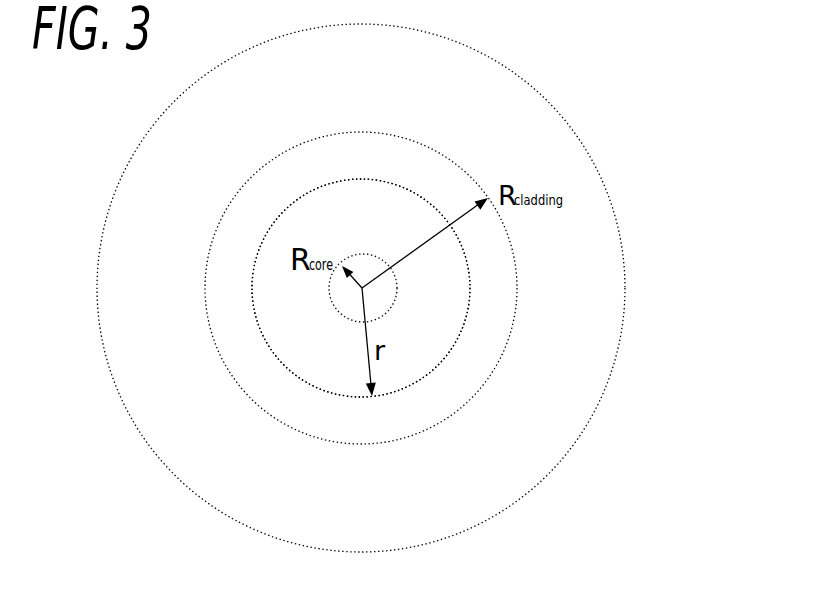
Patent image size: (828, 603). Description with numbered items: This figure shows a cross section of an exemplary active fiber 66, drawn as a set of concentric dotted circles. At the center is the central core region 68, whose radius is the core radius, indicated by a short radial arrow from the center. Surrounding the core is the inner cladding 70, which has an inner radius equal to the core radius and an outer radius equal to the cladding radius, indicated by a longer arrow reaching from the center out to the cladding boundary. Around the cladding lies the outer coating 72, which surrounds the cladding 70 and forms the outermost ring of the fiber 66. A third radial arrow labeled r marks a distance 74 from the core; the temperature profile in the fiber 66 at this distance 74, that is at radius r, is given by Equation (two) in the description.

The active fiber 66 is at (583, 111).
The central core region 68 is at (387, 291).
The inner cladding 70 is at (490, 310).
The outer coating 72 is at (538, 383).
The distance from the core 74 is at (424, 377).